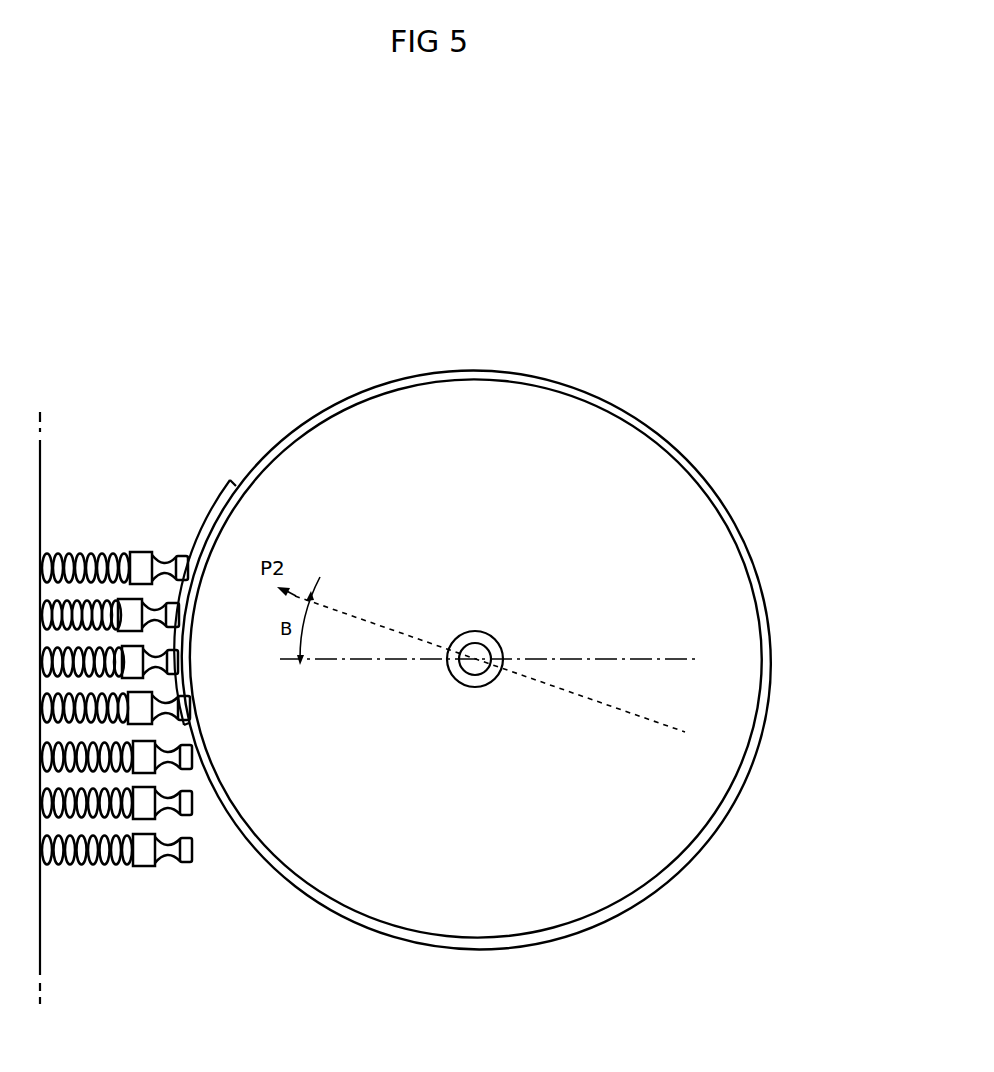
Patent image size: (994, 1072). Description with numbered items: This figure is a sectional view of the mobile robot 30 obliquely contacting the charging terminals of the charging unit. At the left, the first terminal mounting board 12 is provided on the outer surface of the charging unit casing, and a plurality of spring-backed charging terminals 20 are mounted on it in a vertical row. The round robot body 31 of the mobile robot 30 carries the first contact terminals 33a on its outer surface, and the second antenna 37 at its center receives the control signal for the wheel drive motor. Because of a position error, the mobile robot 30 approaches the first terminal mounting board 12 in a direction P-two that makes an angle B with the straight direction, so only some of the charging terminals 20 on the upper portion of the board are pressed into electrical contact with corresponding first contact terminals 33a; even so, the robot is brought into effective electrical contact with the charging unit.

The first terminal mounting board 12 is at (40, 473).
The charging terminals 20 is at (128, 518).
The mobile robot 30 is at (277, 358).
The robot body 31 is at (511, 400).
The first contact terminals 33a is at (229, 478).
The second antenna 37 is at (477, 650).